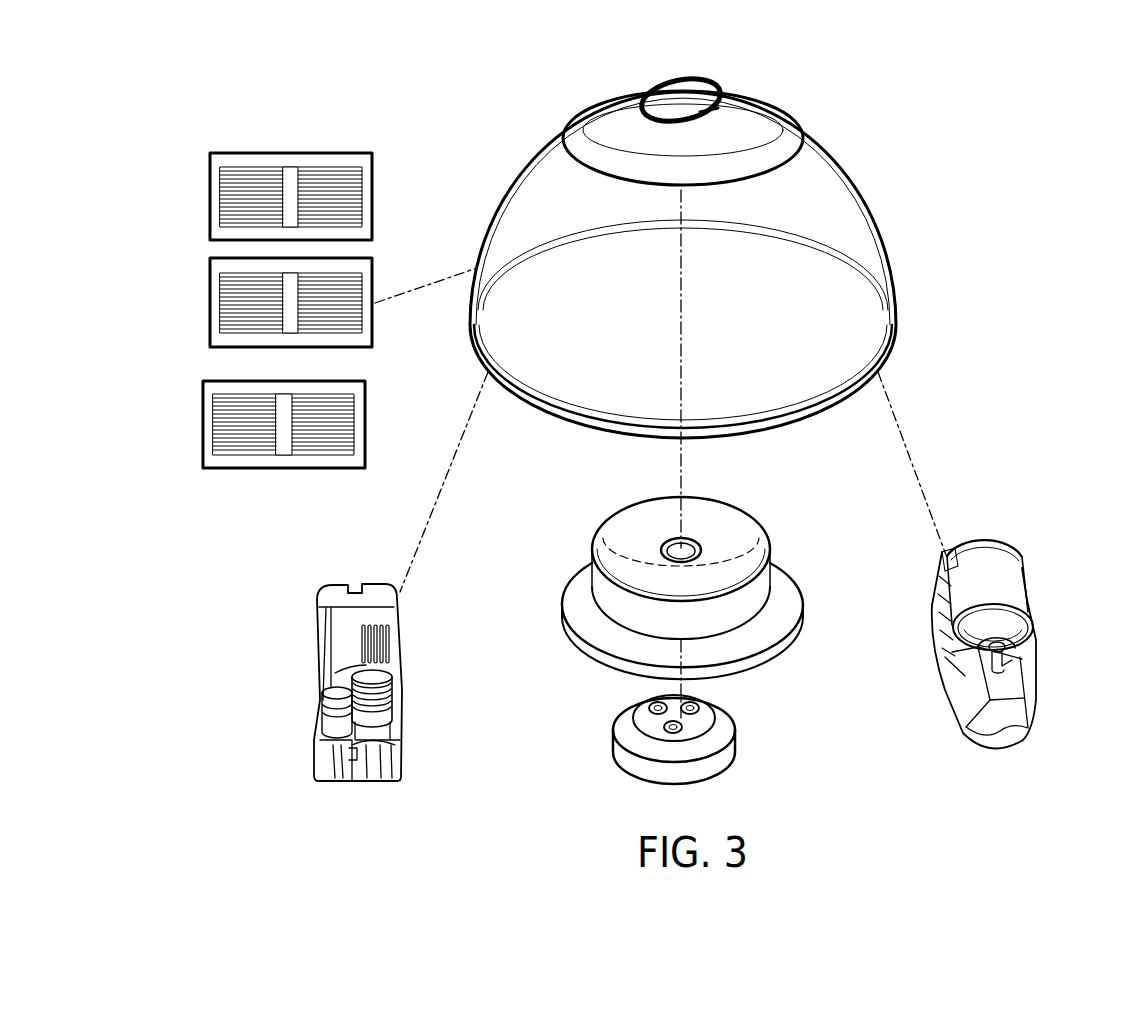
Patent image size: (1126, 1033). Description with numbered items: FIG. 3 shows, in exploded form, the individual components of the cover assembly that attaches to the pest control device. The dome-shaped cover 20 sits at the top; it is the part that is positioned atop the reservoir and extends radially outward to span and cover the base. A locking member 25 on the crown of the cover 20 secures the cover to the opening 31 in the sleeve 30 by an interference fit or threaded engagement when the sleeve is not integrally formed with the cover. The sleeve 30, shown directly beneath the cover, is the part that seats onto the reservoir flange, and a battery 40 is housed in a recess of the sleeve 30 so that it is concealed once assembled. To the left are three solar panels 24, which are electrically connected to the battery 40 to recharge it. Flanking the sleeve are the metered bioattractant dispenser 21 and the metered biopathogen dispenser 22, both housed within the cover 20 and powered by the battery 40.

The cover 20 is at (815, 163).
The metered bioattractant dispenser 21 is at (322, 698).
The metered biopathogen dispenser 22 is at (1022, 679).
The solar panel 24 is at (227, 188).
The locking member 25 is at (700, 108).
The sleeve 30 is at (674, 570).
The opening 31 is at (667, 543).
The battery 40 is at (630, 757).